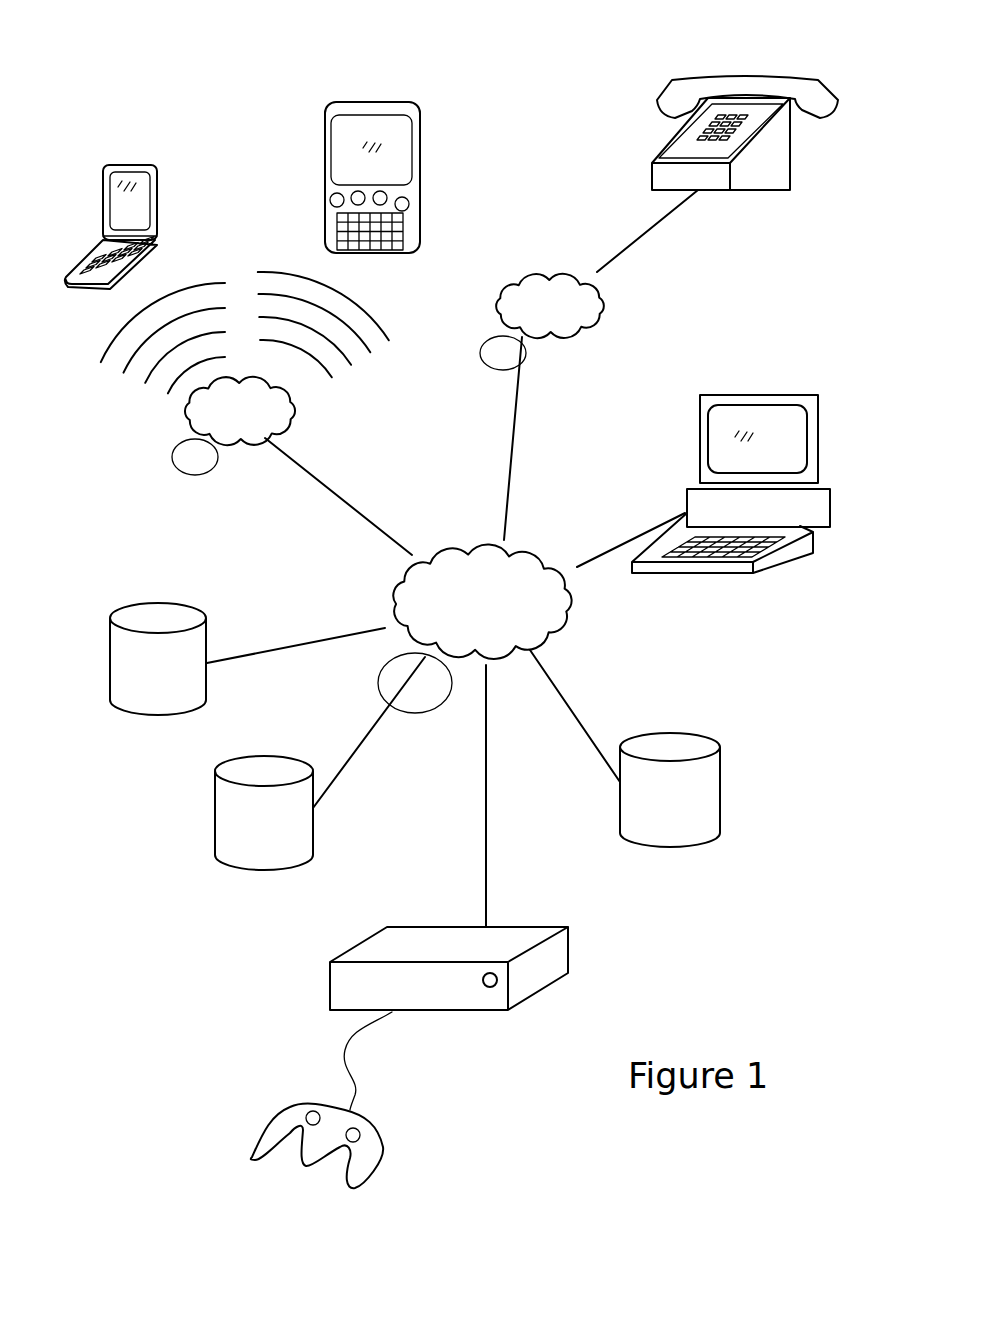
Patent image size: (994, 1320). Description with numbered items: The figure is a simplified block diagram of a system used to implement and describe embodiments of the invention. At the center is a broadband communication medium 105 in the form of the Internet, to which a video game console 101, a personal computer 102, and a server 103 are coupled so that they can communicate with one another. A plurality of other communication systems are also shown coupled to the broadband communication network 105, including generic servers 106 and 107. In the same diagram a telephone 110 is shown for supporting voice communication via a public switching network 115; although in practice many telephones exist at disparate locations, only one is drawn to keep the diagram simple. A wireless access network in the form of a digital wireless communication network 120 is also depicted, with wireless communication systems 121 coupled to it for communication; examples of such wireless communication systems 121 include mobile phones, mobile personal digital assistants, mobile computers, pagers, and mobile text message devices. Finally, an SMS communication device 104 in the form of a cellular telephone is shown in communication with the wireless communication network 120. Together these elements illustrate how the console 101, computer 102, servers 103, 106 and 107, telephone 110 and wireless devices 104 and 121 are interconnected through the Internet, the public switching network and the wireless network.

The video game console 101 is at (457, 1012).
The personal computer 102 is at (725, 393).
The server 103 is at (693, 846).
The SMS communication device 104 is at (133, 165).
The broadband communication medium 105 is at (582, 610).
The generic server 106 is at (128, 712).
The generic server 107 is at (245, 868).
The telephone 110 is at (735, 79).
The public switching network 115 is at (522, 273).
The digital wireless communication network 120 is at (210, 448).
The wireless communication systems 121 is at (368, 103).